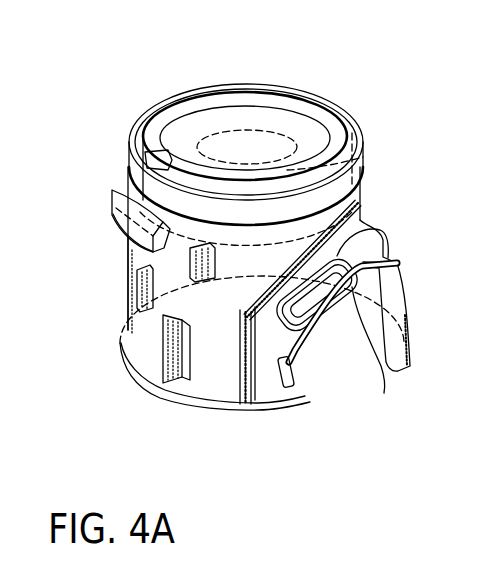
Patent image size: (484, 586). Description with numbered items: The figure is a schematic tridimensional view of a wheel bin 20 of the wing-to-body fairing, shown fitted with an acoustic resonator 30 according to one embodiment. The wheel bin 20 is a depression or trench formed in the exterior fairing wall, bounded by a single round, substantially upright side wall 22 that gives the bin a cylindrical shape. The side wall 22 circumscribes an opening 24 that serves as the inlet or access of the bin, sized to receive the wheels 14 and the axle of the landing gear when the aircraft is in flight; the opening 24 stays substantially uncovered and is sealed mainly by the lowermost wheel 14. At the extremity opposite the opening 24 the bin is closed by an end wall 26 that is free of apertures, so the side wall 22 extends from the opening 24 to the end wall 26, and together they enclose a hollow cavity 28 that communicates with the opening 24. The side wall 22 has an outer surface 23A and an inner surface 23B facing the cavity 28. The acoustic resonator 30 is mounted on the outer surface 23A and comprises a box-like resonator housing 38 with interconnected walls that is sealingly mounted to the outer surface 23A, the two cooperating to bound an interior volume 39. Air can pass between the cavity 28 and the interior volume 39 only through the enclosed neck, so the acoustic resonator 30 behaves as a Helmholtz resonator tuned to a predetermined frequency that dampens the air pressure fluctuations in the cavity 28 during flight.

The wheel bin 20 is at (128, 102).
The wheel 14 is at (337, 176).
The end wall 26 is at (300, 107).
The resonator housing 38 is at (118, 190).
The interior volume 39 is at (112, 217).
The acoustic resonator 30 is at (115, 235).
The outer surface 23A is at (226, 324).
The side wall 22 is at (143, 343).
The cavity 28 is at (253, 327).
The inner surface 23B is at (360, 313).
The opening 24 is at (318, 360).